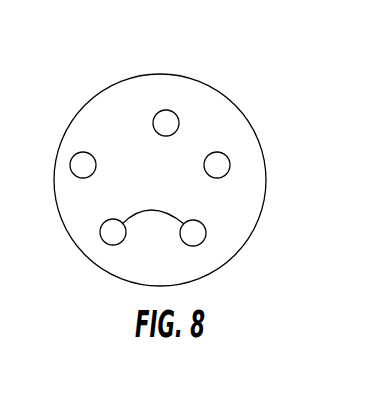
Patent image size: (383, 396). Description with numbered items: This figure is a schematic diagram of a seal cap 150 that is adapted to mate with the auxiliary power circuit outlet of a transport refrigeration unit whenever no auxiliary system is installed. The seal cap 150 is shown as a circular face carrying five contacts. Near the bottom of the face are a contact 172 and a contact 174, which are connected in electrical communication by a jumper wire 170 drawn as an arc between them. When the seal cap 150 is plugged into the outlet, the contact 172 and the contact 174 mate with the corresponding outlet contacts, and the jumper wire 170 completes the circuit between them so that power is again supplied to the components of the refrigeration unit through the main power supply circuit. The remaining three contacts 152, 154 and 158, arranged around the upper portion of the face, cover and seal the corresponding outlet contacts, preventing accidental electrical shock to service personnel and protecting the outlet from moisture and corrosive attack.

The seal cap 150 is at (266, 177).
The contact 152 is at (83, 152).
The contact 154 is at (226, 155).
The contact 158 is at (173, 112).
The jumper wire 170 is at (150, 210).
The contact 172 is at (206, 237).
The contact 174 is at (101, 242).